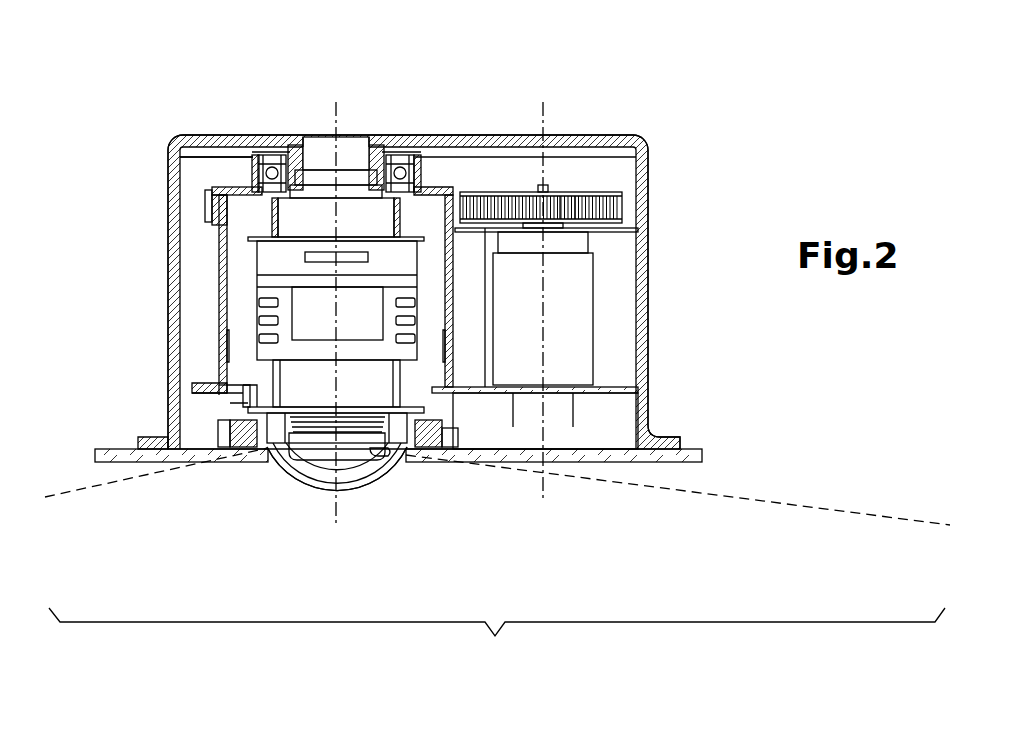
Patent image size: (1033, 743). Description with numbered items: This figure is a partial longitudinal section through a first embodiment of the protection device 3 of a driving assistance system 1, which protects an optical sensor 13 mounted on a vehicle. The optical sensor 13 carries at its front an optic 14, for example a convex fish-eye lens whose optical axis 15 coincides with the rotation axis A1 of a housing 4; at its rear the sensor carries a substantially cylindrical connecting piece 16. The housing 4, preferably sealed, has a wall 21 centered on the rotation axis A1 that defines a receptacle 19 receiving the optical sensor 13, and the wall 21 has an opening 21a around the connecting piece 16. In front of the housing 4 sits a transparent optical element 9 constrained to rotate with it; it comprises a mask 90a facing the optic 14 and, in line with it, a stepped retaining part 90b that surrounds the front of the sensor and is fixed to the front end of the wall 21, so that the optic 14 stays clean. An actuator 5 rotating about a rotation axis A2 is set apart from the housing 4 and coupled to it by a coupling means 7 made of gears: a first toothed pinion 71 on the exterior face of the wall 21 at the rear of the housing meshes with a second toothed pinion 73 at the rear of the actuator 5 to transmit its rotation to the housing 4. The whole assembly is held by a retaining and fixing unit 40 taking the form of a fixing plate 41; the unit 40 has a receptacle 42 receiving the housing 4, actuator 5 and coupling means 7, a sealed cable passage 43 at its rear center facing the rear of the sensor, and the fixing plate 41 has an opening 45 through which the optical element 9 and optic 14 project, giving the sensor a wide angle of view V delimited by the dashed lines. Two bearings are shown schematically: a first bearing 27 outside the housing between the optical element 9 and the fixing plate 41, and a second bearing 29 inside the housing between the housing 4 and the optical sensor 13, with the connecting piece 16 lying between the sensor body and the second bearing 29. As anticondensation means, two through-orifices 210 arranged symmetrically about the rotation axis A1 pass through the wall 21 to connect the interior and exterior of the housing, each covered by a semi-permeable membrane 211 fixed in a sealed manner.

The driving assistance system 1 is at (693, 207).
The protection device 3 is at (140, 373).
The housing 4 is at (205, 290).
The actuator 5 is at (563, 278).
The coupling means 7 is at (612, 196).
The transparent optical element 9 is at (290, 477).
The optical sensor 13 is at (363, 230).
The optic 14 is at (370, 477).
The optical axis 15 is at (335, 513).
The connecting piece 16 is at (293, 152).
The receptacle 19 is at (433, 237).
The wall 21 is at (218, 187).
The opening 21a is at (273, 152).
The first bearing 27 is at (233, 432).
The second bearing 29 is at (265, 152).
The unit 40 is at (648, 407).
The fixing plate 41 is at (137, 457).
The receptacle 42 is at (203, 240).
The passage 43 is at (352, 147).
The opening 45 is at (380, 453).
The first toothed pinion 71 is at (205, 203).
The second toothed pinion 73 is at (567, 198).
The mask 90a is at (303, 487).
The retaining part 90b is at (228, 404).
The through-orifice 210 is at (224, 357).
The semi-permeable membrane 211 is at (224, 337).
The rotation axis A1 is at (335, 116).
The rotation axis A2 is at (543, 118).
The angle of view V is at (497, 561).